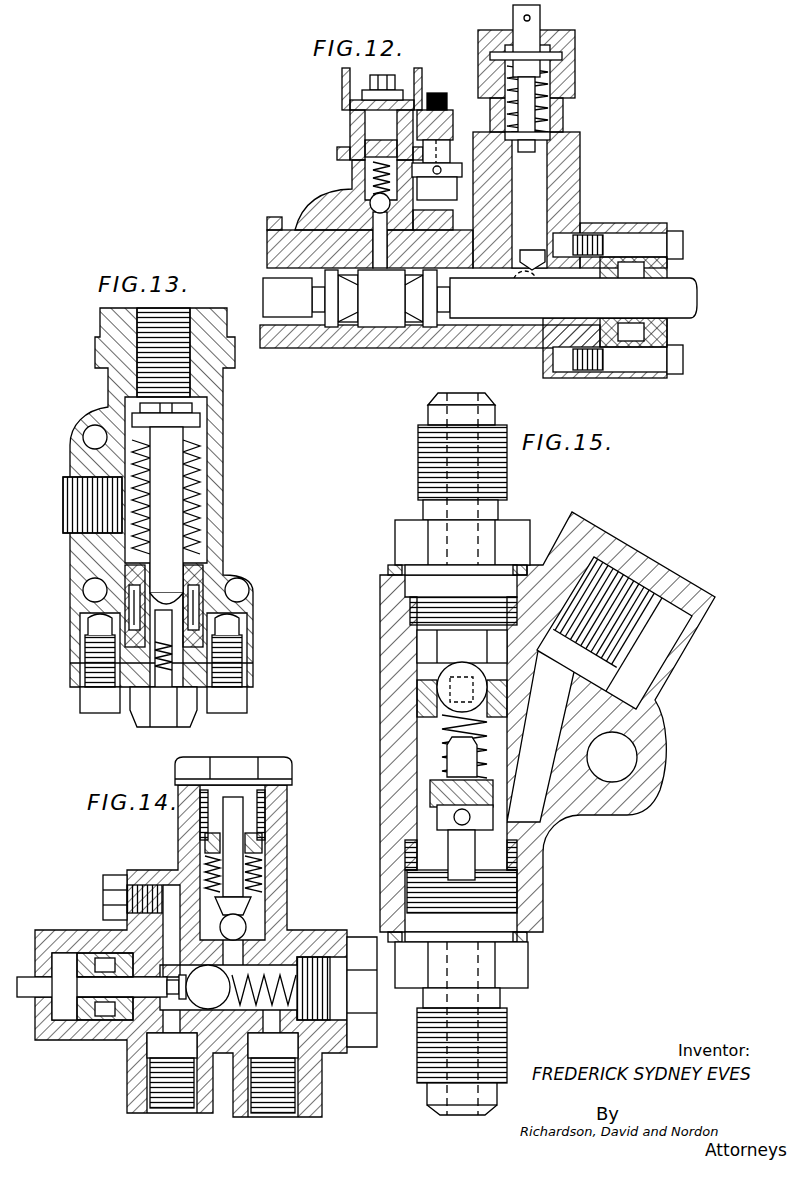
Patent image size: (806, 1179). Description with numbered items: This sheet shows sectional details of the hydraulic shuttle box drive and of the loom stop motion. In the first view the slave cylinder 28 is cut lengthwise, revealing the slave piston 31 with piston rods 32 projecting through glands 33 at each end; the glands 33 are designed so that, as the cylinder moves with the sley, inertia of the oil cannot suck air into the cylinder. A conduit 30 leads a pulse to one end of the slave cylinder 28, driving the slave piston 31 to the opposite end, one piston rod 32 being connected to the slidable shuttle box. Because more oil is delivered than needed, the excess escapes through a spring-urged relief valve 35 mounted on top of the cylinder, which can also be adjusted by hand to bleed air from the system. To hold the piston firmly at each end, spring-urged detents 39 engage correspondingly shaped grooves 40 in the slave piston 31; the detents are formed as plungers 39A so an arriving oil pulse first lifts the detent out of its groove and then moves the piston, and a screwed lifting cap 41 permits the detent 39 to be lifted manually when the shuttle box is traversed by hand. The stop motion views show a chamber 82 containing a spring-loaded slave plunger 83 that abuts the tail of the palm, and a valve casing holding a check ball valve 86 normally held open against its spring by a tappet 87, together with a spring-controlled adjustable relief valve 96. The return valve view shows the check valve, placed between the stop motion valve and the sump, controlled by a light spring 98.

In FIG. 12, the slave cylinder 28 is at (385, 327).
In FIG. 12, the conduit 30 is at (593, 240).
In FIG. 12, the slave piston 31 is at (392, 322).
In FIG. 12, the piston rods 32 is at (292, 305).
In FIG. 12, the glands 33 is at (625, 272).
In FIG. 12, the relief valve 35 is at (372, 204).
In FIG. 12, the spring-urged detents 39 is at (548, 278).
In FIG. 12, the plungers 39A is at (533, 178).
In FIG. 12, the grooves 40 is at (343, 320).
In FIG. 12, the screwed lifting cap 41 is at (577, 48).
In FIG. 13, the chamber 82 is at (190, 470).
In FIG. 13, the spring-loaded slave plunger 83 is at (167, 460).
In FIG. 14, the check ball valve 86 is at (292, 943).
In FIG. 15, the check ball valve 86 is at (458, 698).
In FIG. 14, the tappet 87 is at (66, 997).
In FIG. 14, the spring-controlled adjustable relief valve 96 is at (257, 907).
In FIG. 15, the light spring 98 is at (452, 746).